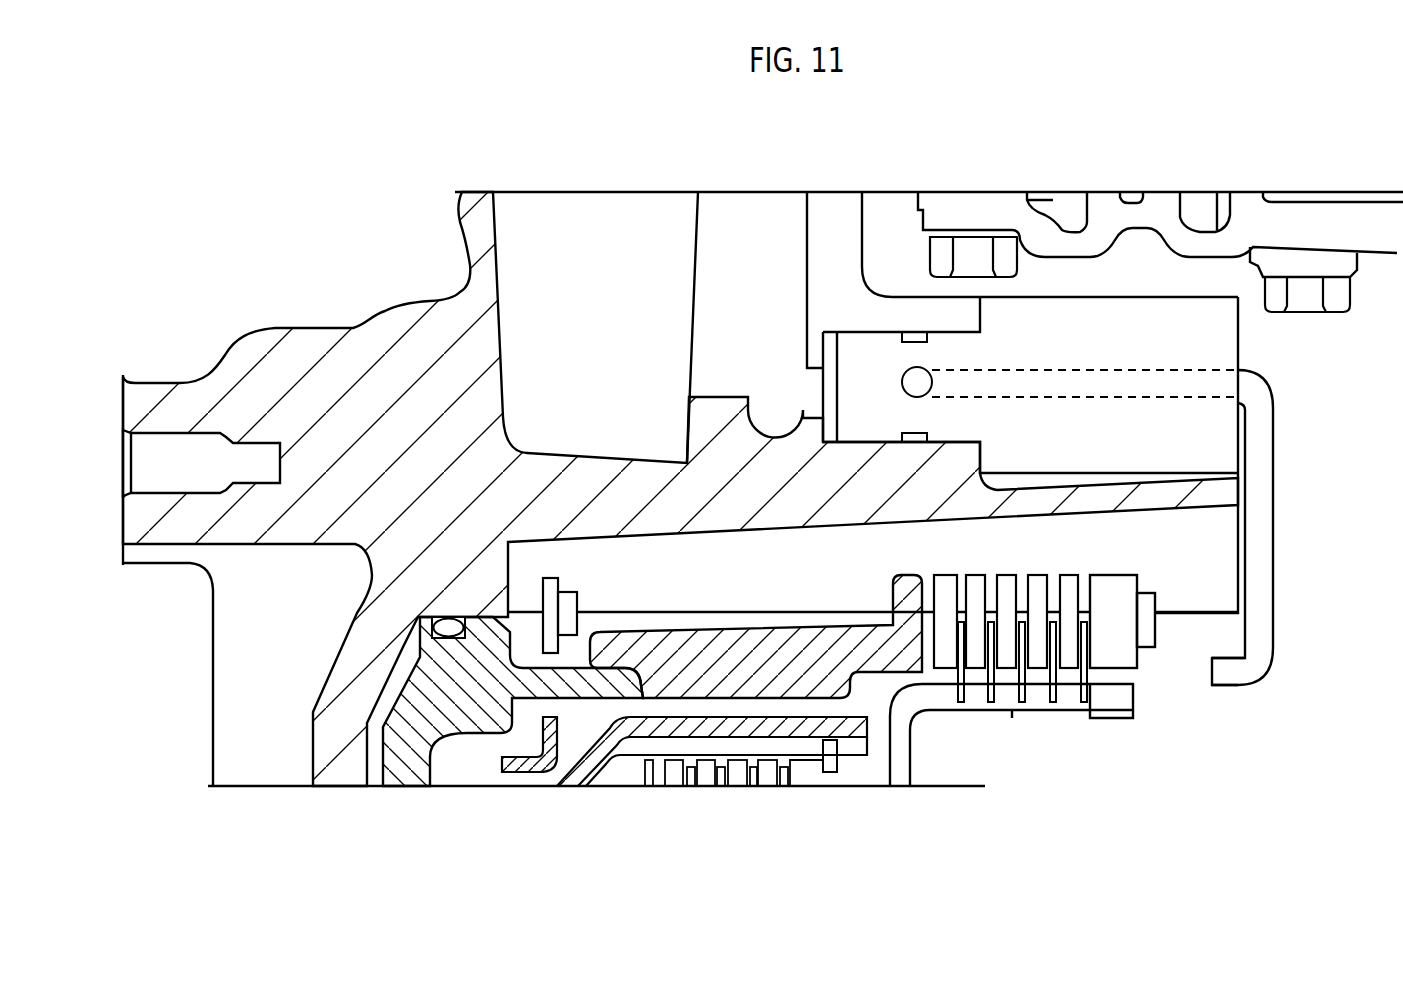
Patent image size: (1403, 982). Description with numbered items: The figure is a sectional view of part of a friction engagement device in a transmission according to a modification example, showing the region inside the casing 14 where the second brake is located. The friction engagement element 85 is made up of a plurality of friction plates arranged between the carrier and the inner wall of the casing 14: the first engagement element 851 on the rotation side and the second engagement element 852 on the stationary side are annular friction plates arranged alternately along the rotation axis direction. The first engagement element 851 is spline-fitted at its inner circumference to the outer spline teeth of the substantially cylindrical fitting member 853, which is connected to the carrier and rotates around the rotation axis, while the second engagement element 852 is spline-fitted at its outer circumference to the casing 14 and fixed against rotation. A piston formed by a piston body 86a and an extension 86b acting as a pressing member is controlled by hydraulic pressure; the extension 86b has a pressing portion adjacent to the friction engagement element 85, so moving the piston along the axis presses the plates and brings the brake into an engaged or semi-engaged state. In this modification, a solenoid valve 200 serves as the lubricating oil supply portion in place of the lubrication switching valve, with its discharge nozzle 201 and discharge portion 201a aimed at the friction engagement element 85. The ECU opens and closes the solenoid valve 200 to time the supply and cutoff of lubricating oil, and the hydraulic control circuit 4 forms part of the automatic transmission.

The hydraulic control circuit 4 is at (775, 248).
The casing 14 is at (381, 318).
The solenoid valve 200 is at (1224, 340).
The discharge nozzle 201 is at (1264, 461).
The discharge portion 201a is at (1223, 675).
The friction engagement element 85 is at (1152, 682).
The first engagement element 851 is at (1090, 704).
The second engagement element 852 is at (1089, 580).
The fitting member 853 is at (1113, 697).
The piston body 86a is at (457, 713).
The extension 86b is at (838, 650).